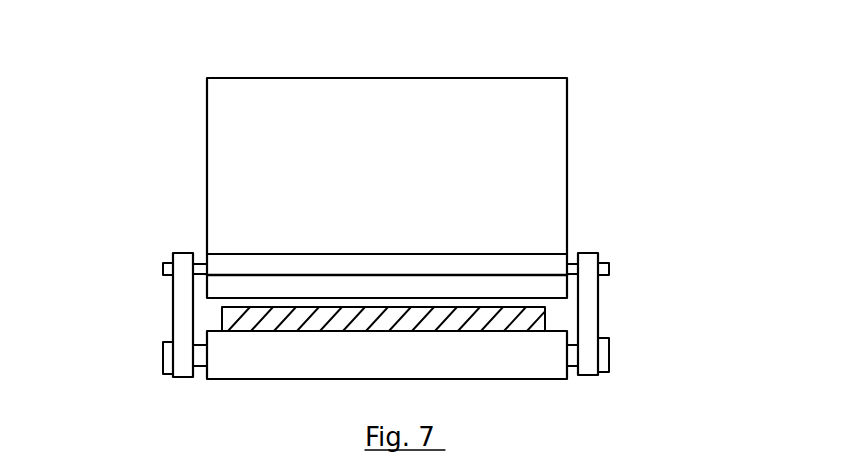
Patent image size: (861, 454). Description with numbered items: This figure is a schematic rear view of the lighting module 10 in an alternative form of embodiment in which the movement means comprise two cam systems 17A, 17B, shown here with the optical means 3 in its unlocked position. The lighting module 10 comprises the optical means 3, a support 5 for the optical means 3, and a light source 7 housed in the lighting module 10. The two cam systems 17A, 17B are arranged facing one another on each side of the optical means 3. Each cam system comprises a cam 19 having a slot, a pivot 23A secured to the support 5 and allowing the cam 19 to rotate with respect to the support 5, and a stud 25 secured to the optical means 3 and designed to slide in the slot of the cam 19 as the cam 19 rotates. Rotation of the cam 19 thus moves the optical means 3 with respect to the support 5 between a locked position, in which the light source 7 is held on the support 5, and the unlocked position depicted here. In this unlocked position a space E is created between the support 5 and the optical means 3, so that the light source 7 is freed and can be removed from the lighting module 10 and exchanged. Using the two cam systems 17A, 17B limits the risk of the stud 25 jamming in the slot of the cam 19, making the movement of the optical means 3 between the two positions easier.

The lighting module 10 is at (194, 42).
The optical means 3 is at (394, 182).
The support 5 is at (395, 366).
The light source 7 is at (438, 321).
The cam 19 is at (586, 253).
The stud 25 is at (609, 268).
The pivot 23A is at (609, 348).
The cam system 17A is at (740, 218).
The cam system 17B is at (160, 245).
The space E is at (553, 309).